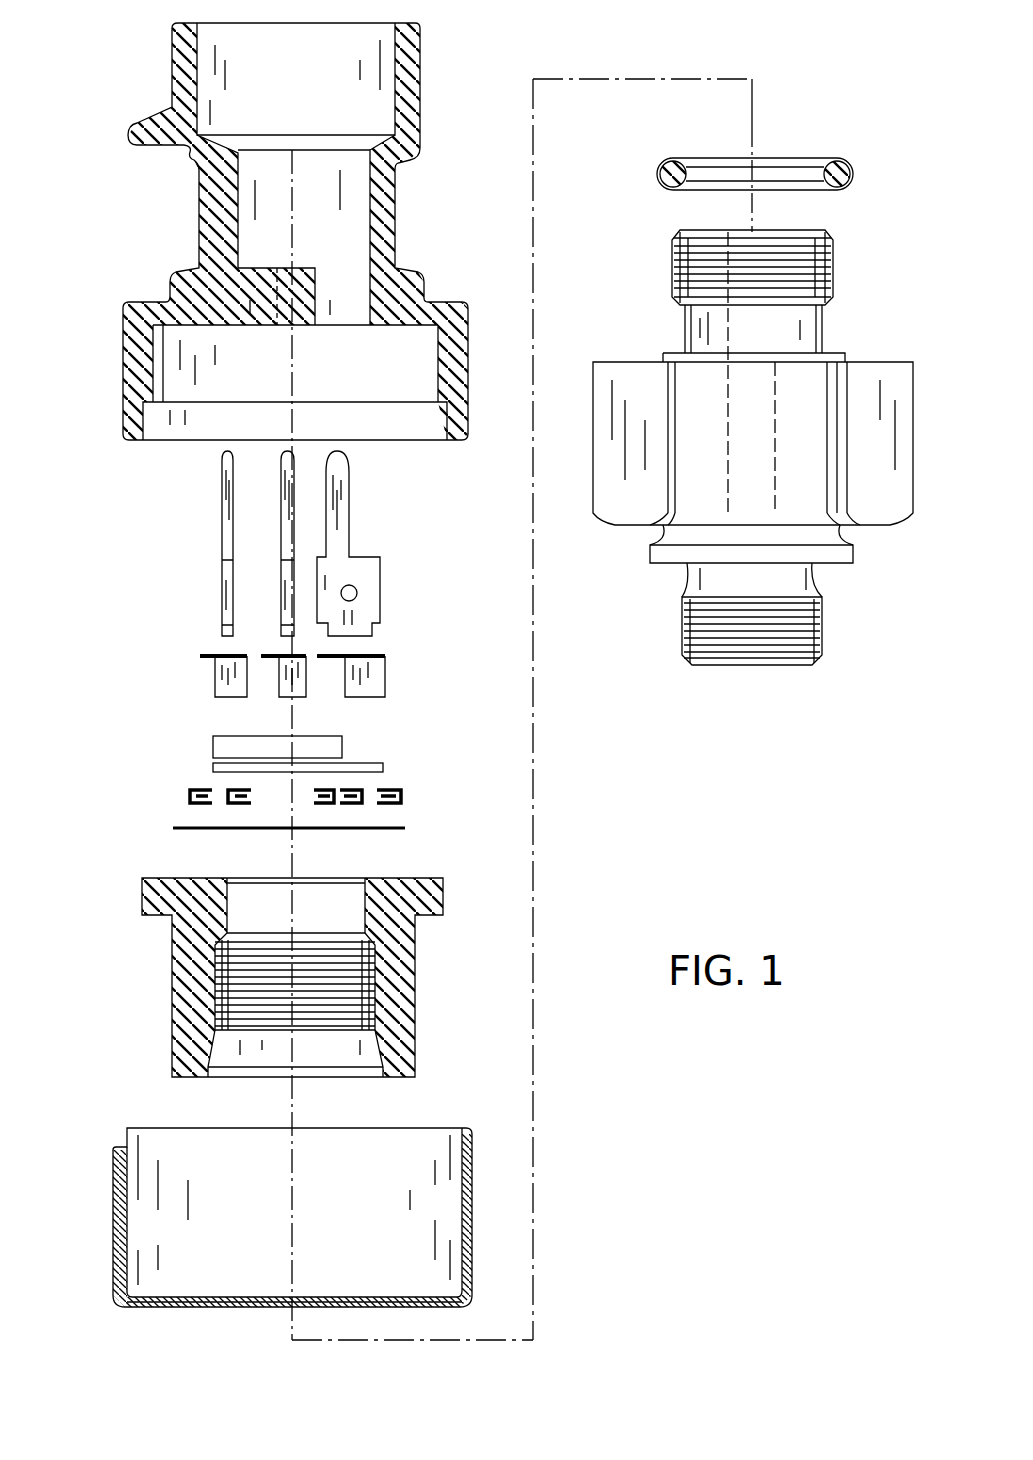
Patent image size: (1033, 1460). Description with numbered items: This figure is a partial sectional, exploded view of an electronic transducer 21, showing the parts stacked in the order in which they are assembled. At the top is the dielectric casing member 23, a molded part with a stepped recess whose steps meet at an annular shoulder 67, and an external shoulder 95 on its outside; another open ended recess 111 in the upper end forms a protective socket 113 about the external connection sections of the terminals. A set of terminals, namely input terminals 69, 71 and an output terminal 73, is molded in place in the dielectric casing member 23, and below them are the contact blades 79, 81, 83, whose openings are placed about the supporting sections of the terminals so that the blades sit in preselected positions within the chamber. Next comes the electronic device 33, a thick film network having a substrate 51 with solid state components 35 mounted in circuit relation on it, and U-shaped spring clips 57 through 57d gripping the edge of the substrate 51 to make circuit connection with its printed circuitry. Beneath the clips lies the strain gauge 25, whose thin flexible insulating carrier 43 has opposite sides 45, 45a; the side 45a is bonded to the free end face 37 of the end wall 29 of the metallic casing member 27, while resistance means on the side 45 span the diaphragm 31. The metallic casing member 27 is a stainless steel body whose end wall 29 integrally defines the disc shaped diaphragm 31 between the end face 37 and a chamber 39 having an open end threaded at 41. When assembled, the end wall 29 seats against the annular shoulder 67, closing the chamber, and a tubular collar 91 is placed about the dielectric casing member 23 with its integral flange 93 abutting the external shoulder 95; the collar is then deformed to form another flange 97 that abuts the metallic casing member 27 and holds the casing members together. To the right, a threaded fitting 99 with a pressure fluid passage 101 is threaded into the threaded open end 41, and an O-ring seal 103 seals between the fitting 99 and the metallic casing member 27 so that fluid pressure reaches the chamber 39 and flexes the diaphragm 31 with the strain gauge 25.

The electronic transducer 21 is at (616, 838).
The dielectric casing member 23 is at (168, 253).
The strain gauge 25 is at (301, 832).
The metallic casing member 27 is at (254, 994).
The end wall 29 is at (142, 897).
The diaphragm 31 is at (283, 893).
The electronic device 33 is at (281, 742).
The solid state components 35 is at (342, 756).
The free end face 37 is at (190, 878).
The chamber 39 is at (333, 925).
The threaded open end 41 is at (363, 1007).
The carrier 43 is at (175, 828).
The opposite side 45 is at (405, 828).
The opposite side 45a is at (405, 830).
The substrate 51 is at (383, 770).
The spring clip 57 is at (229, 800).
The spring clip 57d is at (183, 798).
The annular shoulder 67 is at (438, 440).
The input terminal 69 is at (281, 456).
The input terminal 71 is at (222, 470).
The output terminal 73 is at (337, 452).
The contact blade 79 is at (279, 686).
The contact blade 81 is at (215, 680).
The contact blade 83 is at (385, 668).
The collar 91 is at (291, 1212).
The flange 93 is at (472, 1136).
The external shoulder 95 is at (468, 302).
The flange 97 is at (440, 1307).
The threaded fitting 99 is at (728, 447).
The pressure fluid passage 101 is at (727, 453).
The O-ring seal 103 is at (835, 160).
The open ended recess 111 is at (240, 183).
The protective socket 113 is at (413, 131).